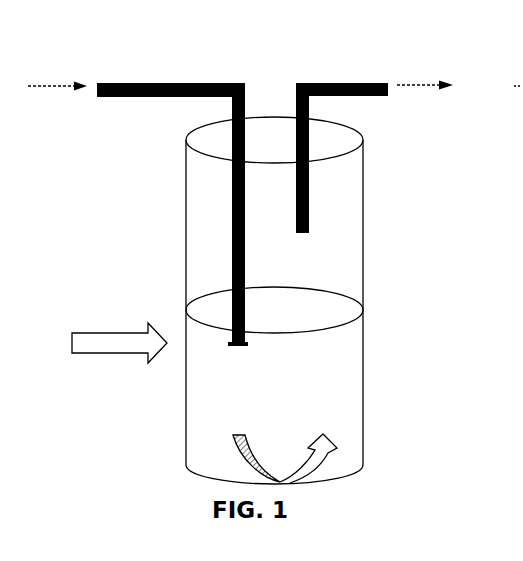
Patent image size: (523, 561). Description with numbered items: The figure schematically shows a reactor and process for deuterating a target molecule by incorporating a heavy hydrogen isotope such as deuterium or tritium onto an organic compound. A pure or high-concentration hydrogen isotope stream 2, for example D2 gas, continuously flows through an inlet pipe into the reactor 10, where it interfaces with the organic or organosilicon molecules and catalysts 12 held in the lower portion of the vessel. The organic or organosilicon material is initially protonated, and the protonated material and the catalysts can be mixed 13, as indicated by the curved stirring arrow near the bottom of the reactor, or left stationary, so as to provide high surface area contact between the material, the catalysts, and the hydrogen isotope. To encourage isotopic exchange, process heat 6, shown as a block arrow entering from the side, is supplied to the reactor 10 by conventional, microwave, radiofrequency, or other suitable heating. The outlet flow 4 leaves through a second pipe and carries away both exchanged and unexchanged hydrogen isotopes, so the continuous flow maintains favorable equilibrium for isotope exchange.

The hydrogen isotope stream 2 is at (52, 86).
The outlet flow 4 is at (430, 85).
The process heat 6 is at (125, 347).
The reactor 10 is at (203, 272).
The organic or organosilicon molecules and catalysts 12 is at (337, 422).
The mixing 13 is at (305, 471).